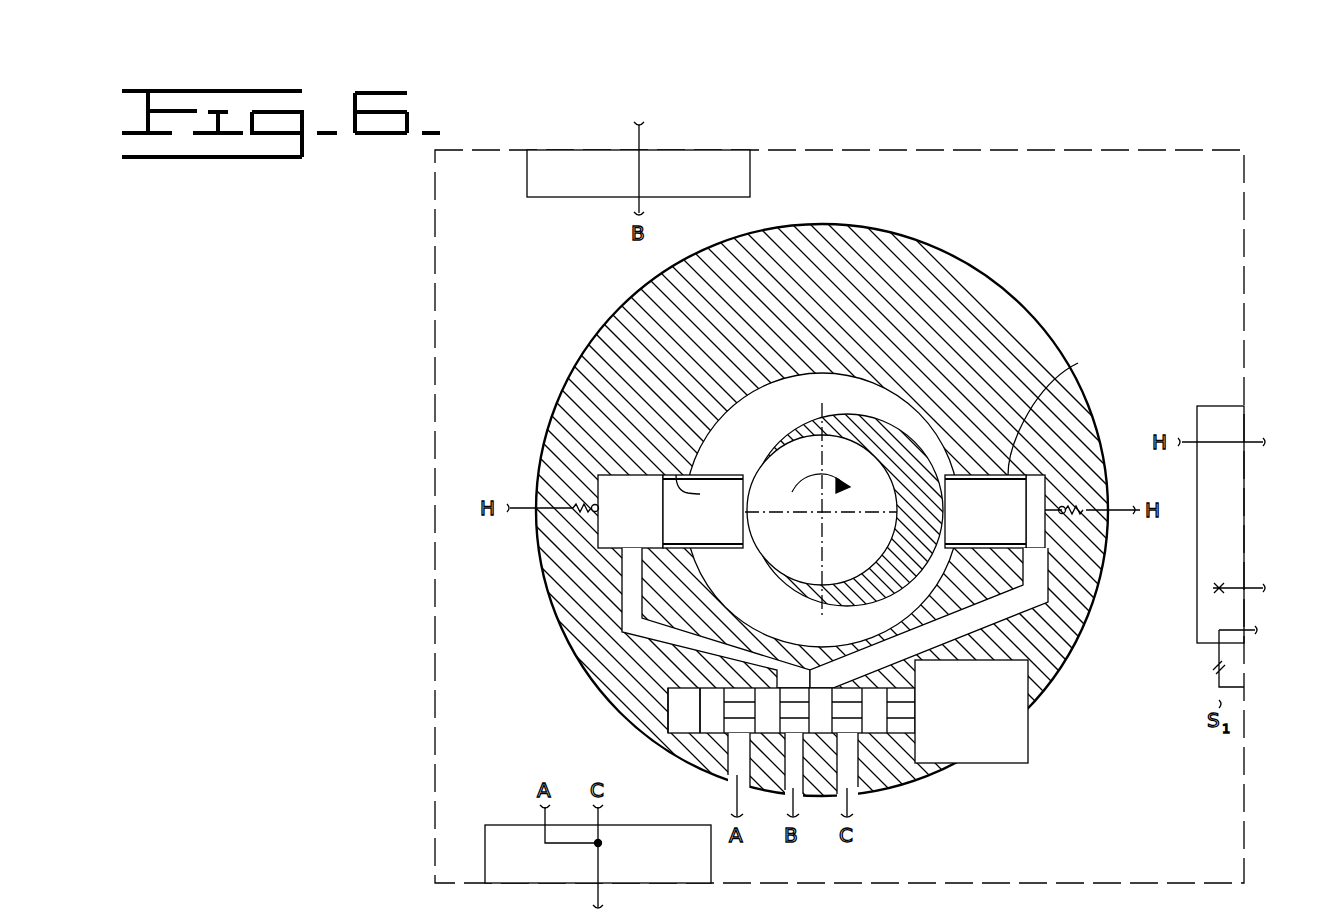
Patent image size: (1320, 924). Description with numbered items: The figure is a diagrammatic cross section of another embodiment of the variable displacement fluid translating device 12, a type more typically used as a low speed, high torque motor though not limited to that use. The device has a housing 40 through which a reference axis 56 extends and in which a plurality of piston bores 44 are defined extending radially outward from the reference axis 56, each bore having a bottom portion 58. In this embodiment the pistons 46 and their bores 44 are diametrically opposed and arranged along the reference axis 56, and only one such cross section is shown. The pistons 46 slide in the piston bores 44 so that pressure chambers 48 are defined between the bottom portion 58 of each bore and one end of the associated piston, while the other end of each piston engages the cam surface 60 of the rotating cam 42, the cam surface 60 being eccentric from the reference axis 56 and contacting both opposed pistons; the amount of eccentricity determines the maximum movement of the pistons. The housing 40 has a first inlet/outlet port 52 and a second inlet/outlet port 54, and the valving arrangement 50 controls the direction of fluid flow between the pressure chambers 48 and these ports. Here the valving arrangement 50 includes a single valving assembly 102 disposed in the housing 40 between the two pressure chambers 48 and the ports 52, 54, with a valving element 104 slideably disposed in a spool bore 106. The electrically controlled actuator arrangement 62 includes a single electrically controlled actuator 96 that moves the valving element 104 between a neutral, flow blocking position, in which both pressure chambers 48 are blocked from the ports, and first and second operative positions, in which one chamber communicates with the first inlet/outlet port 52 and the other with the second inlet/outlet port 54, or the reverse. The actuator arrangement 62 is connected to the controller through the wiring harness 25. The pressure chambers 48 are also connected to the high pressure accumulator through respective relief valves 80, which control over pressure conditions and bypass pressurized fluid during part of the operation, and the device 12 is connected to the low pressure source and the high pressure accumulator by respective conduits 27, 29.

The variable displacement fluid translating device 12 is at (400, 243).
The first inlet/outlet port 52 is at (639, 138).
The housing 40 is at (850, 287).
The piston bores 44 is at (895, 424).
The pistons 46 is at (722, 531).
The pressure chambers 48 is at (640, 520).
The bottom portion 58 is at (590, 540).
The cam surface 60 is at (820, 416).
The rotating cam 42 is at (821, 510).
The reference axis 56 is at (822, 512).
The relief valves 80 is at (545, 493).
The conduit 29 is at (1263, 450).
The conduit 27 is at (1262, 585).
The wiring harness 25 is at (1232, 690).
The single valving assembly 102 is at (612, 757).
The valving element 104 is at (716, 733).
The spool bore 106 is at (666, 712).
The single electrically controlled actuator 96 is at (1028, 740).
The electrically controlled actuator arrangement 62 is at (1104, 718).
The valving arrangement 50 is at (1050, 814).
The second inlet/outlet port 54 is at (745, 800).